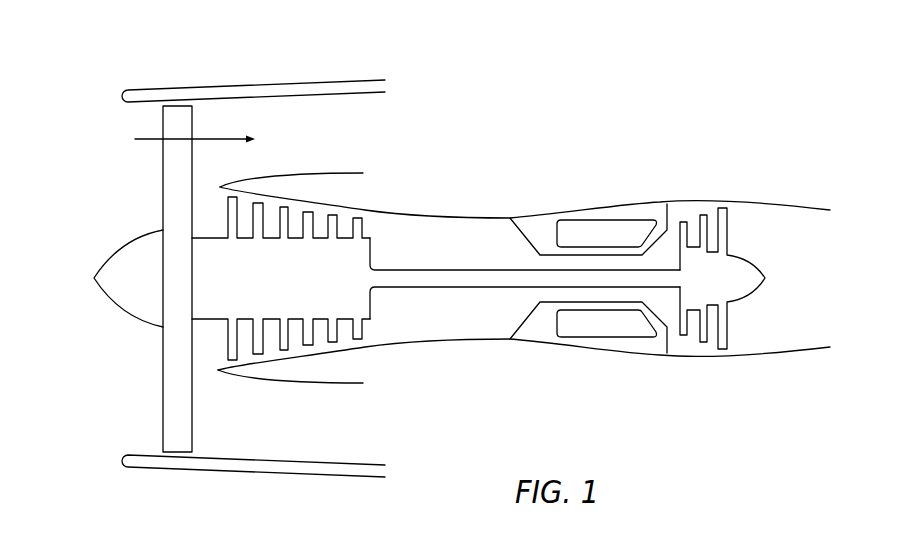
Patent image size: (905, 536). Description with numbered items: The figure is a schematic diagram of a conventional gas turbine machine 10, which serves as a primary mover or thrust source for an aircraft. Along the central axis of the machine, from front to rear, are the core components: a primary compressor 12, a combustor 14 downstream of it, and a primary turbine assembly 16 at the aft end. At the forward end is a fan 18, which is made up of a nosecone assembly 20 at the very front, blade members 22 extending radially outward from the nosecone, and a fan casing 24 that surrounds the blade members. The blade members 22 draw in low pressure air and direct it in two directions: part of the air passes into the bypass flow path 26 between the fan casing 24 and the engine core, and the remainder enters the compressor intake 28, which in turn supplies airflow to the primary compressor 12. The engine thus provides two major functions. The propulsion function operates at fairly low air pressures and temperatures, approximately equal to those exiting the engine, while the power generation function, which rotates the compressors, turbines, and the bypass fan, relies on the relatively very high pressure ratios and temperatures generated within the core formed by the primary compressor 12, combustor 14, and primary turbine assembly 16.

The gas turbine machine 10 is at (604, 112).
The primary compressor 12 is at (313, 268).
The combustor 14 is at (598, 232).
The primary turbine assembly 16 is at (715, 277).
The fan 18 is at (110, 165).
The nosecone assembly 20 is at (124, 320).
The blade members 22 is at (180, 436).
The fan casing 24 is at (258, 90).
The bypass flow path 26 is at (223, 138).
The compressor intake 28 is at (221, 220).